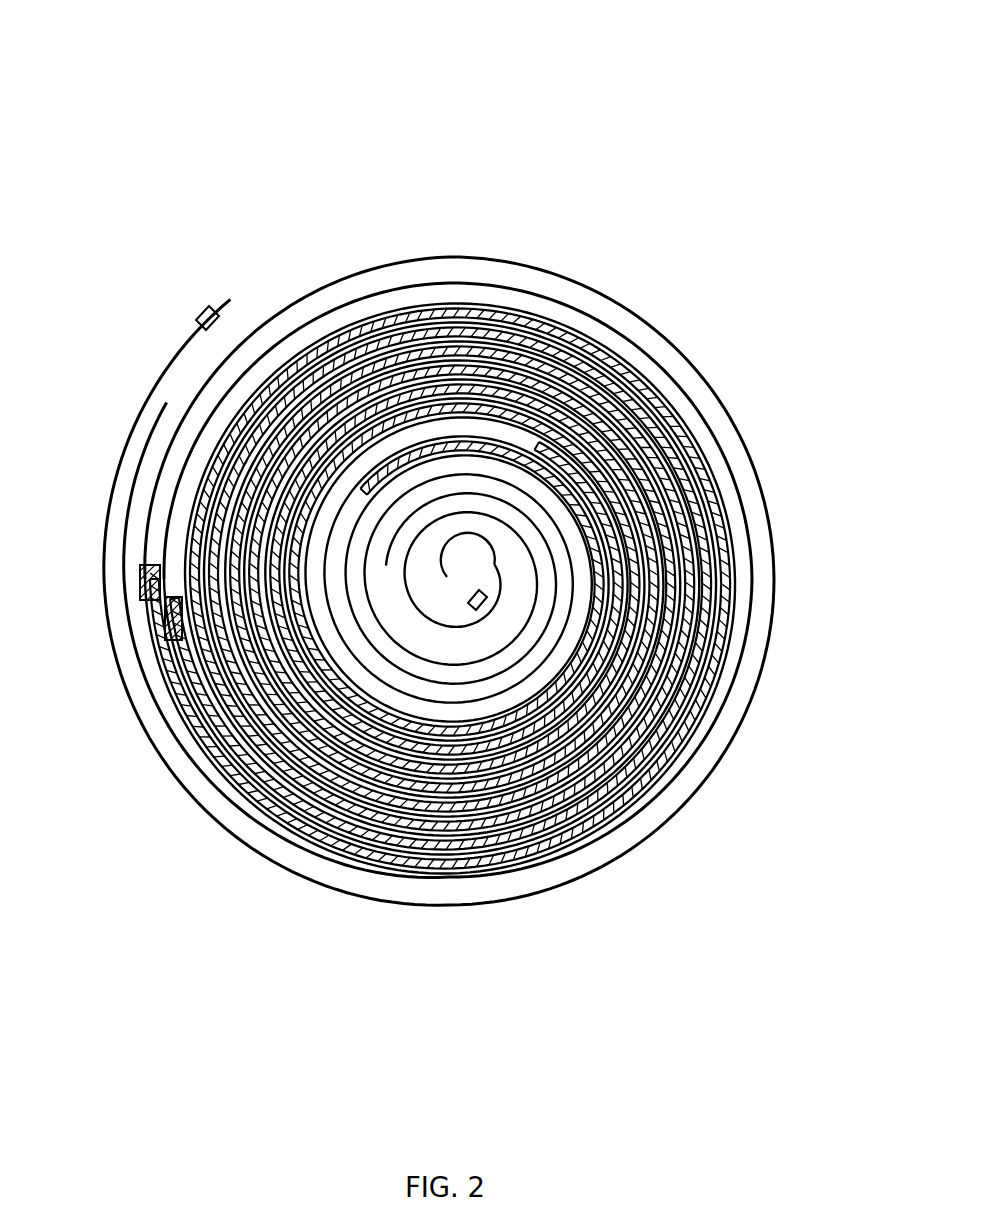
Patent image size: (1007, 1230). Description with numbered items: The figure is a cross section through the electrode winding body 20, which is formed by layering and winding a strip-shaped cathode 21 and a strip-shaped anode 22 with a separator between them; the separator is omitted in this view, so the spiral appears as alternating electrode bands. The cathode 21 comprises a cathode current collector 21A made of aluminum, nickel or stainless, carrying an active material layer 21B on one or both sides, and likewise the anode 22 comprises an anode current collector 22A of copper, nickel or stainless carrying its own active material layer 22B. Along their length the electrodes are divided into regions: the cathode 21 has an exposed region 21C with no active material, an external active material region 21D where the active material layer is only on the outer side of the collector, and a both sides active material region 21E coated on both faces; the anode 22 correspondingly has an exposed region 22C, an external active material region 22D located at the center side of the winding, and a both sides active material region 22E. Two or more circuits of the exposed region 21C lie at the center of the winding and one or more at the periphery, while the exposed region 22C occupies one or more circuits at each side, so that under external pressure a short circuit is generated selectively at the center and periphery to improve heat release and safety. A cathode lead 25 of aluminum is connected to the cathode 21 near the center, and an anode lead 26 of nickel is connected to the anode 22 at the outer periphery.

The electrode winding body 20 is at (650, 93).
The cathode 21 is at (481, 510).
The cathode current collector 21A is at (432, 325).
The active material layer 21B is at (527, 345).
The exposed region 21C is at (665, 338).
The external active material region 21D is at (510, 518).
The both sides active material region 21E is at (709, 457).
The anode 22 is at (448, 633).
The anode current collector 22A is at (427, 870).
The active material layer 22B is at (543, 878).
The exposed region 22C is at (327, 590).
The external active material region 22D is at (377, 460).
The both sides active material region 22E is at (647, 795).
The cathode lead 25 is at (478, 606).
The anode lead 26 is at (203, 312).